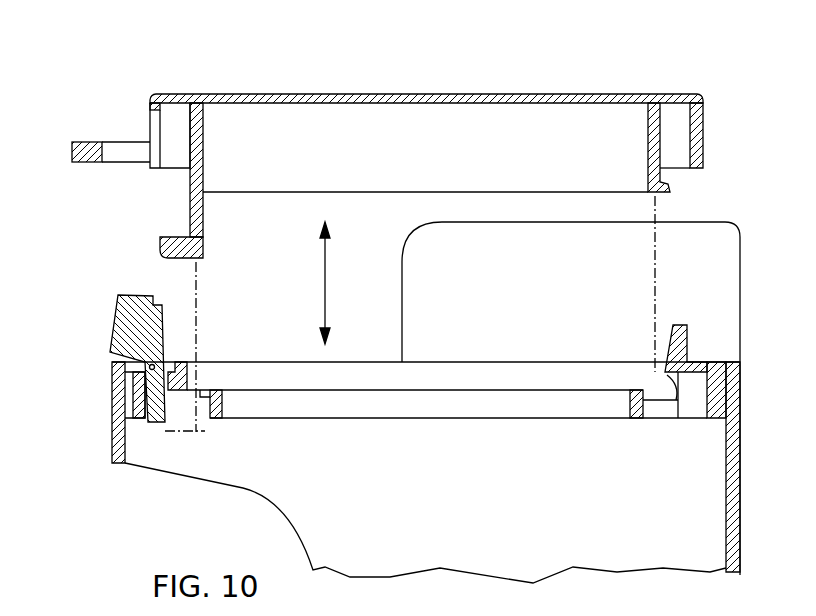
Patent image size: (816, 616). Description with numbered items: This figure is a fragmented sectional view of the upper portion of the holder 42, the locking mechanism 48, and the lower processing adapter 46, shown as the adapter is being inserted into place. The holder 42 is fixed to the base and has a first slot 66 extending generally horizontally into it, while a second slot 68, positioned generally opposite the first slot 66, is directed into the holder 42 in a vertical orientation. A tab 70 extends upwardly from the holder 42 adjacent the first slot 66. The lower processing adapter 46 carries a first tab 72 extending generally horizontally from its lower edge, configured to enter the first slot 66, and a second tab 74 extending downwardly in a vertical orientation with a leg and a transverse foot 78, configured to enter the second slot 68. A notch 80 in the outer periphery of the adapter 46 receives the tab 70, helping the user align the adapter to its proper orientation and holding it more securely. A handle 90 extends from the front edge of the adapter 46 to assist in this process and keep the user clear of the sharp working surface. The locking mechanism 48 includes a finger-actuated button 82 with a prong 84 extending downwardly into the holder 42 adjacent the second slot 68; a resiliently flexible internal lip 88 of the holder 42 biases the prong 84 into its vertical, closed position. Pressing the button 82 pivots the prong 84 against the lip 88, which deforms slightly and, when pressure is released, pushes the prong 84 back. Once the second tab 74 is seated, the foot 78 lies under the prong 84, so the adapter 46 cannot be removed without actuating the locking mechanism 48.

The holder 42 is at (476, 500).
The lower processing adapter 46 is at (266, 84).
The locking mechanism 48 is at (95, 320).
The first slot 66 is at (678, 401).
The second slot 68 is at (201, 400).
The tab 70 is at (680, 342).
The first tab 72 is at (665, 195).
The second tab 74 is at (170, 214).
The foot 78 is at (166, 256).
The notch 80 is at (678, 135).
The finger-actuated button 82 is at (112, 338).
The prong 84 is at (118, 464).
The internal lip 88 is at (140, 405).
The handle 90 is at (87, 142).